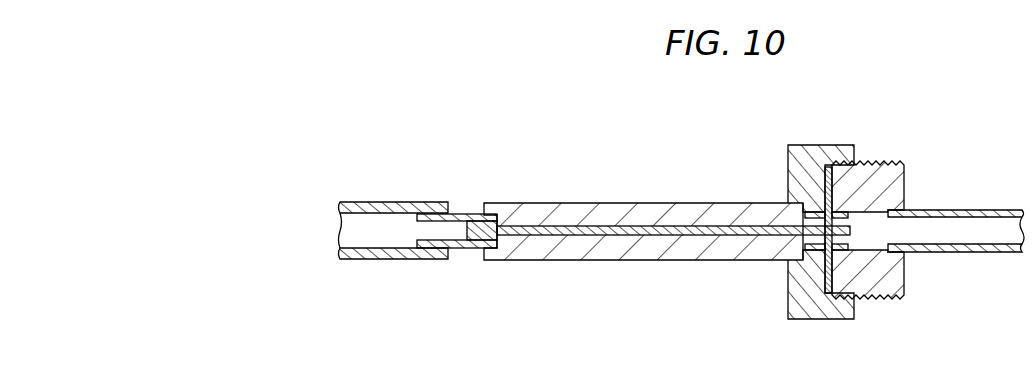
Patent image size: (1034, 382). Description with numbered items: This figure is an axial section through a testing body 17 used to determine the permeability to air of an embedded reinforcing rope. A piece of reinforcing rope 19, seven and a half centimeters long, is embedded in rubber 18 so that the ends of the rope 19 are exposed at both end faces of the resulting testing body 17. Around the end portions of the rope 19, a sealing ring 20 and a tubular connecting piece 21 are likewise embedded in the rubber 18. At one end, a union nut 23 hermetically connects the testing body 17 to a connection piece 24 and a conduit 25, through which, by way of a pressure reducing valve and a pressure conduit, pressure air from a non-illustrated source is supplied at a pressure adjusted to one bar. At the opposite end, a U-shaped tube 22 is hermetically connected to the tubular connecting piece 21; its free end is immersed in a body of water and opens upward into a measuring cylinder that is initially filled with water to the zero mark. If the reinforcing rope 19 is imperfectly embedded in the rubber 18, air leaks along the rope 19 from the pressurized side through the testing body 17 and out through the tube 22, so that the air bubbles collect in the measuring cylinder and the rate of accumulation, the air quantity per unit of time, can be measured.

The testing body 17 is at (685, 202).
The rubber 18 is at (609, 210).
The reinforcing rope 19 is at (547, 230).
The sealing ring 20 is at (828, 166).
The tubular connecting piece 21 is at (462, 213).
The U-shaped tube 22 is at (392, 202).
The union nut 23 is at (790, 147).
The connection piece 24 is at (878, 180).
The conduit 25 is at (947, 212).